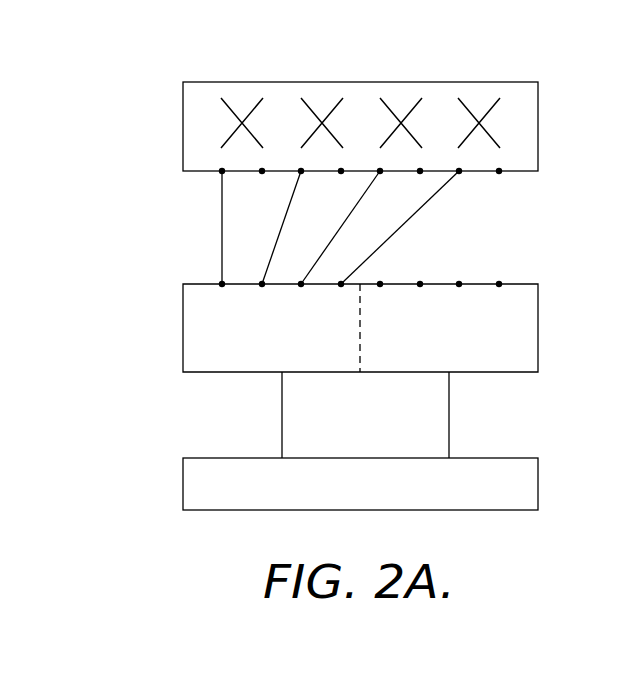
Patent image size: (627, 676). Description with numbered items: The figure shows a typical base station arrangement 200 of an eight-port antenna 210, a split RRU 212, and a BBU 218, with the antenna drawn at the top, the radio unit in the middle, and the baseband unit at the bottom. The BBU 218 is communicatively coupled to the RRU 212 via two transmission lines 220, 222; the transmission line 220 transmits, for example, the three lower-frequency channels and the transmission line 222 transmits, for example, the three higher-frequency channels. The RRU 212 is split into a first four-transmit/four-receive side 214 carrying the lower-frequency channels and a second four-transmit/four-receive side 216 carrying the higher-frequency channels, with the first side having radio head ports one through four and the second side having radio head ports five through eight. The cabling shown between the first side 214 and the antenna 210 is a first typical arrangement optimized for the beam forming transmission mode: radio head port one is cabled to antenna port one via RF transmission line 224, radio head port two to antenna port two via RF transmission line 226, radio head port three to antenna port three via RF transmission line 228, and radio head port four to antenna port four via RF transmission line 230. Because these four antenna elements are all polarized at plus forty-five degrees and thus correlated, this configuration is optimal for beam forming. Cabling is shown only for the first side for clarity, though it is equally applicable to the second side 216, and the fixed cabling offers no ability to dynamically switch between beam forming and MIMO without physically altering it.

The arrangement 200 is at (104, 121).
The antenna 210 is at (513, 82).
The split RRU 212 is at (354, 327).
The first 4T/4R side 214 is at (193, 368).
The second 4T/4R side 216 is at (517, 368).
The BBU 218 is at (513, 458).
The transmission line 220 is at (283, 416).
The transmission line 222 is at (450, 416).
The RF transmission line 224 is at (222, 225).
The RF transmission line 226 is at (283, 225).
The RF transmission line 228 is at (343, 224).
The RF transmission line 230 is at (405, 222).